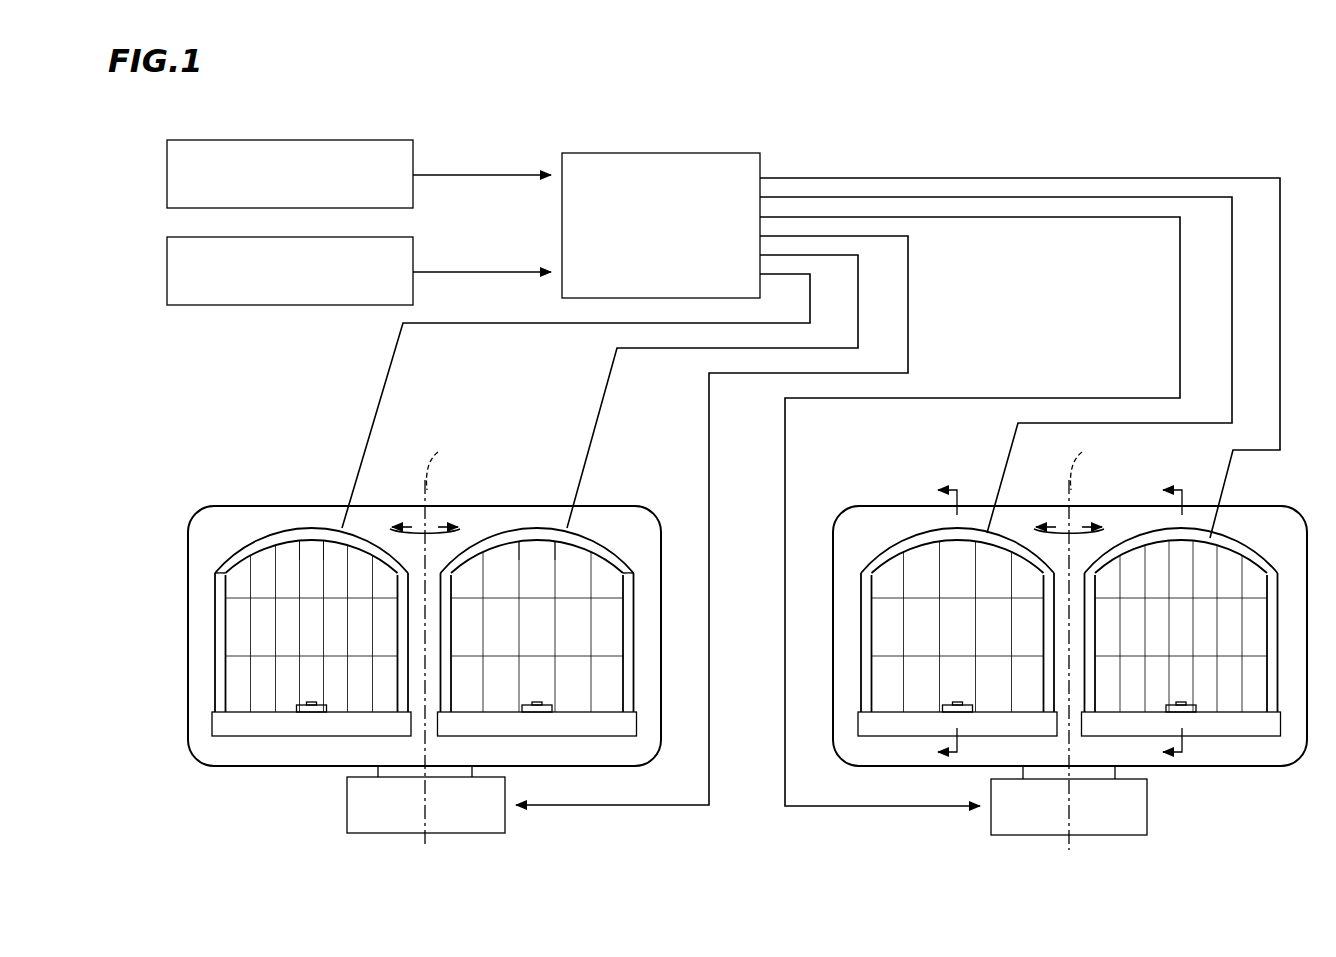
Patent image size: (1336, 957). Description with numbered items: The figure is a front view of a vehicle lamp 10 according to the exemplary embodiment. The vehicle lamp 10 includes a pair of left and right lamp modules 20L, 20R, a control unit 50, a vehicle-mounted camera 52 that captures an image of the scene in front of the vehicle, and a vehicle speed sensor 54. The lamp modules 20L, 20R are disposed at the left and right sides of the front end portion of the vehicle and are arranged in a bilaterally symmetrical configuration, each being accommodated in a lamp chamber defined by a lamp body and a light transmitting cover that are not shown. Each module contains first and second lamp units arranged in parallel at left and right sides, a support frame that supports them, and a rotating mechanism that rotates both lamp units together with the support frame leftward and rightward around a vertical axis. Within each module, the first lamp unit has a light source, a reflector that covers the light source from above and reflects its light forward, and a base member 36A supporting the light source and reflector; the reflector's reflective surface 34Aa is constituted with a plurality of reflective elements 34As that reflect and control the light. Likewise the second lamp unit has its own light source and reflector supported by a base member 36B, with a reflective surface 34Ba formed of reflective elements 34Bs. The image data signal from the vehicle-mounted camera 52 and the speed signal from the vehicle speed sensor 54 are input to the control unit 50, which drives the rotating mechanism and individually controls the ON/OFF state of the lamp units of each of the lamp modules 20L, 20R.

The vehicle lamp 10 is at (1132, 153).
The right lamp module 20R is at (469, 466).
The left lamp module 20L is at (1113, 466).
The reflective surface 34Aa is at (240, 588).
The reflective surface 34Ba is at (612, 590).
The reflective elements 34As is at (362, 575).
The reflective elements 34Bs is at (527, 575).
The base member 36A is at (266, 737).
The base member 36B is at (587, 737).
The control unit 50 is at (698, 153).
The vehicle-mounted camera 52 is at (283, 140).
The vehicle speed sensor 54 is at (283, 306).